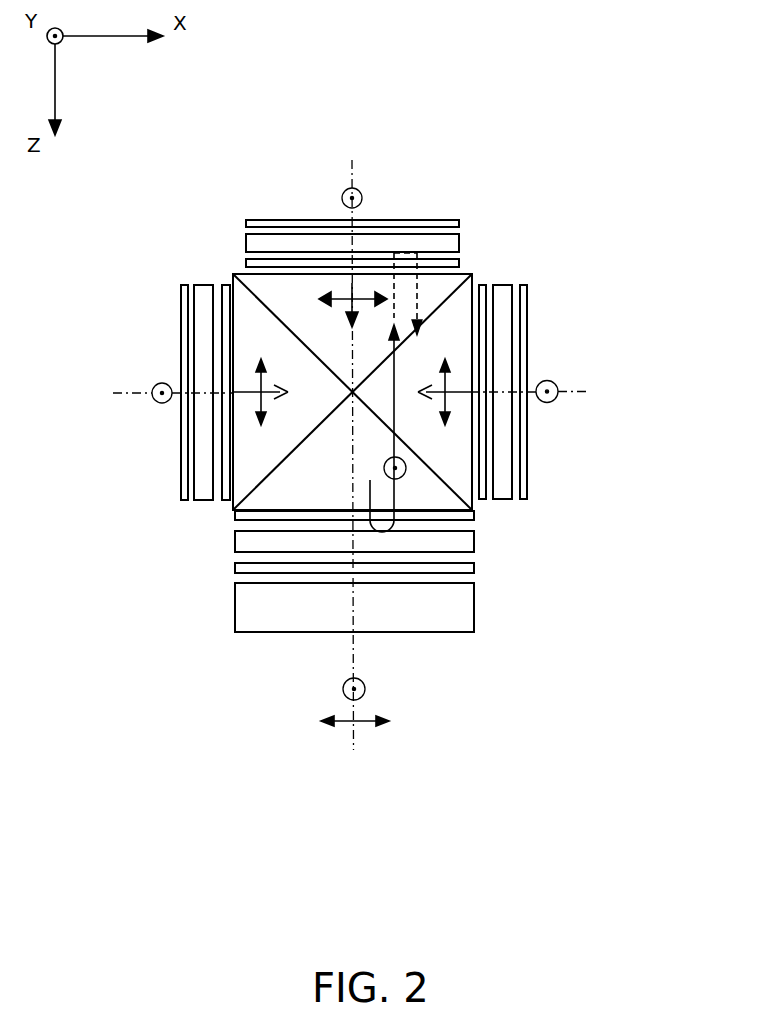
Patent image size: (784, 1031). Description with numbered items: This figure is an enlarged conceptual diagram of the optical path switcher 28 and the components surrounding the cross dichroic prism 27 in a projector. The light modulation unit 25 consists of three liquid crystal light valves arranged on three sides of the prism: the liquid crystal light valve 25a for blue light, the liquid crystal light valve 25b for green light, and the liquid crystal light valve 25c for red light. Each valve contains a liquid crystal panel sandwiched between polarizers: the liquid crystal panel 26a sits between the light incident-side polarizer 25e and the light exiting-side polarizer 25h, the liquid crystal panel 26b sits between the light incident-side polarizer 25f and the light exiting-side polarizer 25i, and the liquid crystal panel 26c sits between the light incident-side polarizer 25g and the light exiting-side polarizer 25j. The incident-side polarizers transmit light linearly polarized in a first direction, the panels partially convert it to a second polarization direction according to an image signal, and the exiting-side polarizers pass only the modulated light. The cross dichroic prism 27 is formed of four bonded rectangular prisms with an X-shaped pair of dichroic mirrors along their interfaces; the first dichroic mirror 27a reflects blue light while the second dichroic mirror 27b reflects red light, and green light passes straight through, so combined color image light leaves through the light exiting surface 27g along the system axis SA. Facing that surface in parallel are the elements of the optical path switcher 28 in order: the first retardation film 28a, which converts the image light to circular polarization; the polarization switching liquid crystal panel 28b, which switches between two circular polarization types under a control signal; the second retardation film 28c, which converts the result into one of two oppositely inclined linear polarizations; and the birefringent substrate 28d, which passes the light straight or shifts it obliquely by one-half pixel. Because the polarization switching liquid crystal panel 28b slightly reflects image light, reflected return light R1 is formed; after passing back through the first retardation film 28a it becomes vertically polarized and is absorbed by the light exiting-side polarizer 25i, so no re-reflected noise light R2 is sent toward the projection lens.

The light modulation unit 25 is at (572, 258).
The liquid crystal light valve for color B 25a is at (542, 450).
The liquid crystal light valve for color G 25b is at (450, 203).
The liquid crystal light valve for color R 25c is at (170, 508).
The light incident-side polarizer 25e is at (522, 333).
The light incident-side polarizer 25f is at (320, 223).
The light incident-side polarizer 25g is at (183, 443).
The light exiting-side polarizer 25h is at (486, 305).
The light exiting-side polarizer 25i is at (292, 265).
The light exiting-side polarizer 25j is at (228, 450).
The liquid crystal panel 26a is at (507, 365).
The liquid crystal panel 26b is at (402, 242).
The liquid crystal panel 26c is at (205, 417).
The cross dichroic prism 27 is at (230, 510).
The first dichroic mirror 27a is at (453, 294).
The second dichroic mirror 27b is at (270, 312).
The light exiting surface 27g is at (263, 272).
The optical path switcher 28 is at (453, 645).
The first retardation film 28a is at (475, 517).
The polarization switching liquid crystal panel 28b is at (465, 543).
The second retardation film 28c is at (470, 567).
The birefringent substrate 28d is at (468, 602).
The reflected return light R1 is at (406, 462).
The re-reflected noise light R2 is at (423, 292).
The system optical axis SA is at (353, 660).